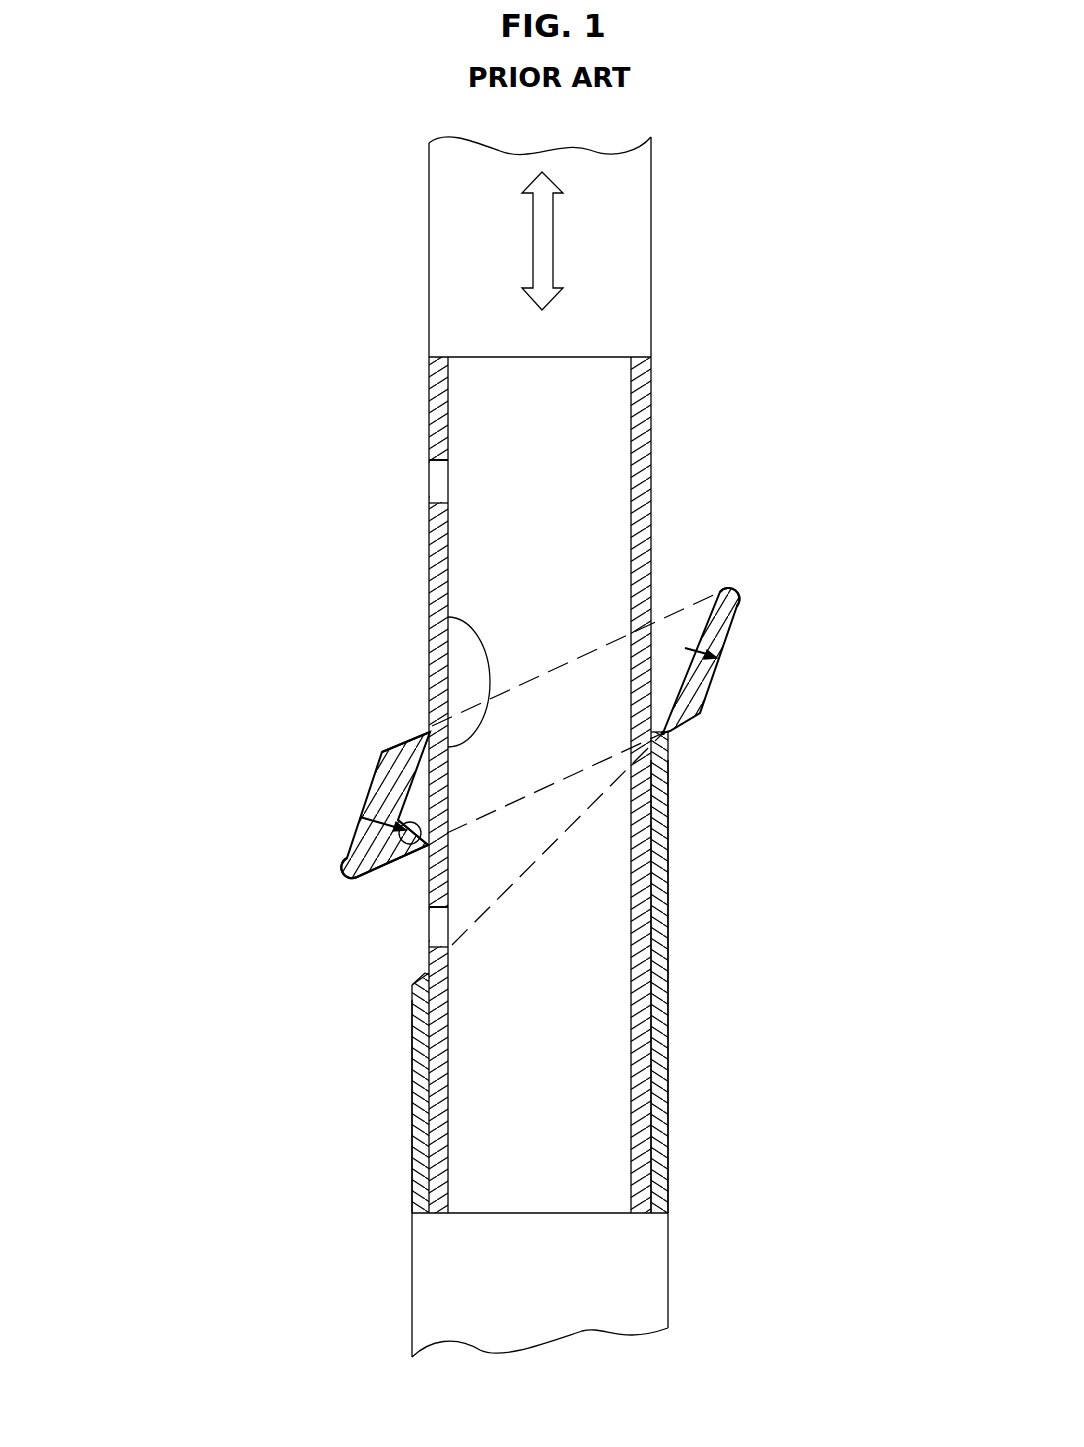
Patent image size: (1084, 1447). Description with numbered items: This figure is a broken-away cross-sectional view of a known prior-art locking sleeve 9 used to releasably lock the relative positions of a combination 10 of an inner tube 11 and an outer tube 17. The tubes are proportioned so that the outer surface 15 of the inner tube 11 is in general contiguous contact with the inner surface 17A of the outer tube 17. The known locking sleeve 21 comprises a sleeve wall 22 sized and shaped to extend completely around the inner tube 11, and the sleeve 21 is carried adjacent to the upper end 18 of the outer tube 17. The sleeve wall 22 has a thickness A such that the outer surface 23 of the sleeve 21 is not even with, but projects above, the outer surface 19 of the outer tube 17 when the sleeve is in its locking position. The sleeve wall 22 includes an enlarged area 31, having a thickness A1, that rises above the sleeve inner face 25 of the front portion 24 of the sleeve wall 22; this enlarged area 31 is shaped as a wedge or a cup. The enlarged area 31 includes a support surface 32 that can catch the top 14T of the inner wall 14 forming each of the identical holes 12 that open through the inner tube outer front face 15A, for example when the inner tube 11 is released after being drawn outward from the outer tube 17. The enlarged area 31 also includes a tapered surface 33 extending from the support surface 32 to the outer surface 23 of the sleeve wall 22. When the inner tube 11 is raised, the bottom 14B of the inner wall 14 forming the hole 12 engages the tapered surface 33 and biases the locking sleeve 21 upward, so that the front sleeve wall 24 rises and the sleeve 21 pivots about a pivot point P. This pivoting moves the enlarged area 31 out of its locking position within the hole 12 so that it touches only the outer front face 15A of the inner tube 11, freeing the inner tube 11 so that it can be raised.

The locking sleeve 9 is at (714, 398).
The combination 10 is at (712, 446).
The inner tube 11 is at (702, 489).
The holes 12 is at (420, 488).
The inner wall 14 is at (430, 473).
The bottom of the inner wall 14B is at (430, 495).
The top of the inner wall 14T is at (427, 923).
The outer surface of the inner tube 15 is at (430, 382).
The inner tube outer front face 15A is at (430, 432).
The outer tube 17 is at (732, 925).
The inner surface of the outer tube 17A is at (650, 1028).
The upper end of the outer tube 18 is at (670, 732).
The outer surface of the outer tube 19 is at (668, 845).
The locking sleeve 21 is at (745, 641).
The sleeve wall 22 is at (730, 597).
The outer surface of the sleeve 23 is at (738, 625).
The front portion of the locking sleeve wall 24 is at (380, 728).
The sleeve inner face 25 is at (460, 622).
The enlarged area 31 is at (358, 853).
The support surface 32 is at (412, 865).
The tapered surface 33 is at (378, 878).
The thickness of the sleeve wall A is at (720, 648).
The thickness of the enlarged area A1 is at (353, 833).
The pivot point P is at (668, 733).